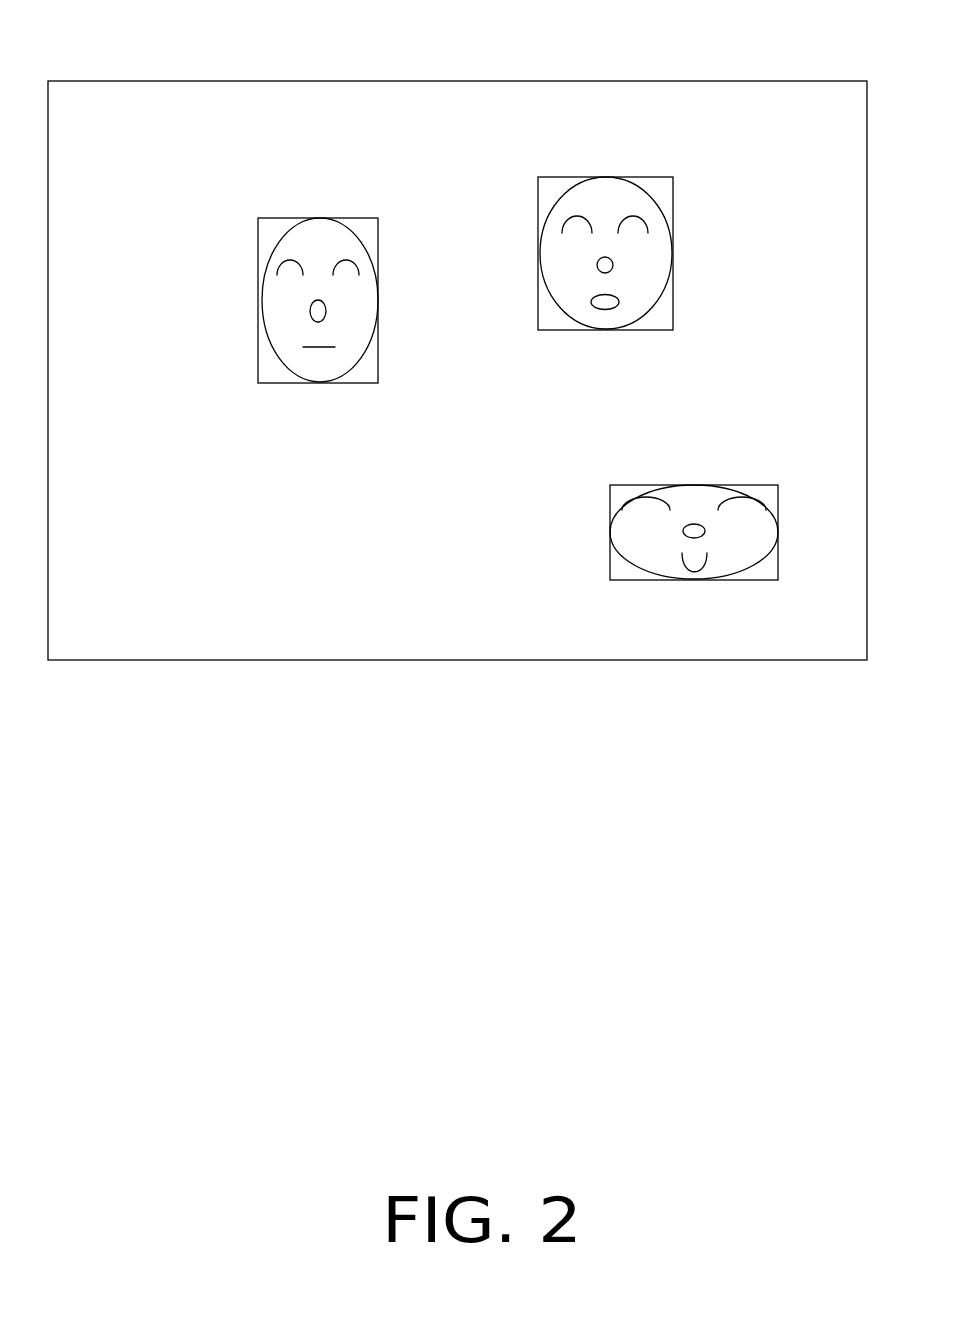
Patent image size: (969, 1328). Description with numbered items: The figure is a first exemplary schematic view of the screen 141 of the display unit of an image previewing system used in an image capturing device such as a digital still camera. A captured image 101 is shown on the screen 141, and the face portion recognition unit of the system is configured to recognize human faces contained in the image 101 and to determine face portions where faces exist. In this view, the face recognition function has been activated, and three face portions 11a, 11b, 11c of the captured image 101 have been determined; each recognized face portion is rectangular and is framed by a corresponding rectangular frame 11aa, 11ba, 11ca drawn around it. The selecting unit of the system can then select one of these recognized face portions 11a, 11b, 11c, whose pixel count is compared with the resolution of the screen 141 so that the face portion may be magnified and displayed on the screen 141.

The image 101 is at (450, 333).
The screen 141 is at (489, 82).
The face portion 11a is at (283, 310).
The rectangular frame 11aa is at (277, 217).
The face portion 11b is at (657, 260).
The rectangular frame 11ba is at (557, 175).
The face portion 11c is at (625, 532).
The rectangular frame 11ca is at (632, 485).